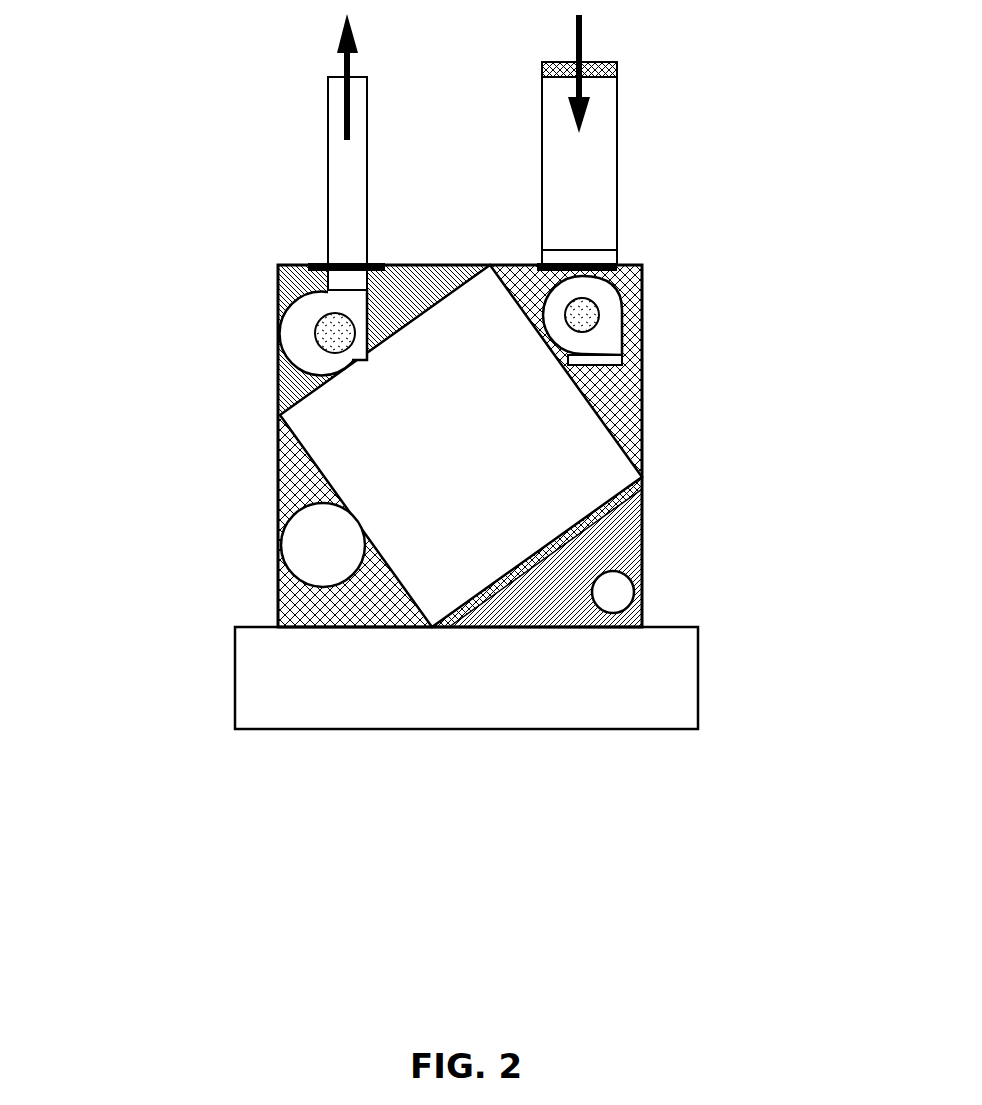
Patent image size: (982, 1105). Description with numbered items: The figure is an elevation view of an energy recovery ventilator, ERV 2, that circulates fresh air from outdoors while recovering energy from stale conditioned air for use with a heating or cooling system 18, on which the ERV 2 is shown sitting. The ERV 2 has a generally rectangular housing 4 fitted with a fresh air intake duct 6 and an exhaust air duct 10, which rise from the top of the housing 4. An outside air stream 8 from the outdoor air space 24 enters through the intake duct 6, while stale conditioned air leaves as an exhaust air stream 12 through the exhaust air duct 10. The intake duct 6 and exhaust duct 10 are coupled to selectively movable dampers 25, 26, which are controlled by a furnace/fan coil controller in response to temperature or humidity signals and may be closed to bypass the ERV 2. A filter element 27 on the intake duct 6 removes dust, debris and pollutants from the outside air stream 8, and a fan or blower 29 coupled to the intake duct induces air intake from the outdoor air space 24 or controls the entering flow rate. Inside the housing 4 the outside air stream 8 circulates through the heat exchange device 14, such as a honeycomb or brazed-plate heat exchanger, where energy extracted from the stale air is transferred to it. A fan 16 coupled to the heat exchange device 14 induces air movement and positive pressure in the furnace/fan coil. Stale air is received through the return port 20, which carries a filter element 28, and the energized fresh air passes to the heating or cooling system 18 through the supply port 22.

The ERV 2 is at (660, 360).
The housing 4 is at (276, 472).
The fresh air intake duct 6 is at (617, 170).
The outside air stream 8 is at (582, 43).
The exhaust air duct 10 is at (328, 134).
The exhaust air stream 12 is at (342, 60).
The heat exchange device 14 is at (570, 480).
The fan 16 is at (296, 328).
The heating or cooling system 18 is at (228, 652).
The return port 20 is at (617, 588).
The supply port 22 is at (296, 568).
The outdoor air space 24 is at (460, 66).
The damper 25 is at (308, 265).
The damper 26 is at (617, 263).
The filter element 27 is at (617, 62).
The filter element 28 is at (643, 501).
The fan or blower 29 is at (642, 285).